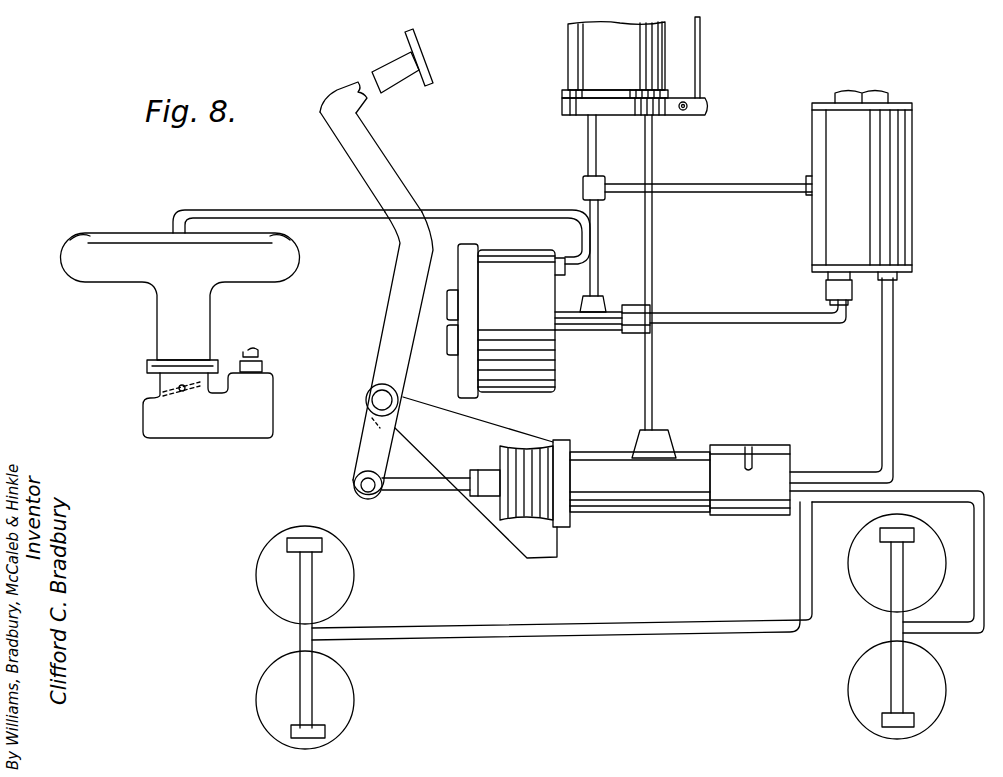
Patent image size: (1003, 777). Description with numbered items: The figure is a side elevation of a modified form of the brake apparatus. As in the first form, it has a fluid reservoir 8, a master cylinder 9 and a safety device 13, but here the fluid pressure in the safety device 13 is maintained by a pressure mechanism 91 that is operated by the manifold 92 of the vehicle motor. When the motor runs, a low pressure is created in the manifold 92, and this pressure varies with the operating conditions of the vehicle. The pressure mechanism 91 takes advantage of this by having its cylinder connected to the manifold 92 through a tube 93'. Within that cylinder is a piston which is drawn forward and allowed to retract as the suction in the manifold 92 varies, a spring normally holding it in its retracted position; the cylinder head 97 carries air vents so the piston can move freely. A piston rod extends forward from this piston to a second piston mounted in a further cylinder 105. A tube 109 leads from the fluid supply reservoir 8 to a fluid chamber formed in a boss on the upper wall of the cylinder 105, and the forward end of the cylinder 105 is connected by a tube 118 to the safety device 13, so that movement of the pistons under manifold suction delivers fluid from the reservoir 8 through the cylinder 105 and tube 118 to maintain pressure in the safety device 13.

The fluid reservoir 8 is at (580, 46).
The master cylinder 9 is at (650, 500).
The safety device 13 is at (900, 197).
The pressure mechanism 91 is at (543, 360).
The manifold 92 is at (190, 236).
The tube 93' is at (381, 218).
The cylinder head 97 is at (460, 372).
The cylinder 105 is at (612, 333).
The tube 109 is at (598, 272).
The tube 118 is at (742, 323).